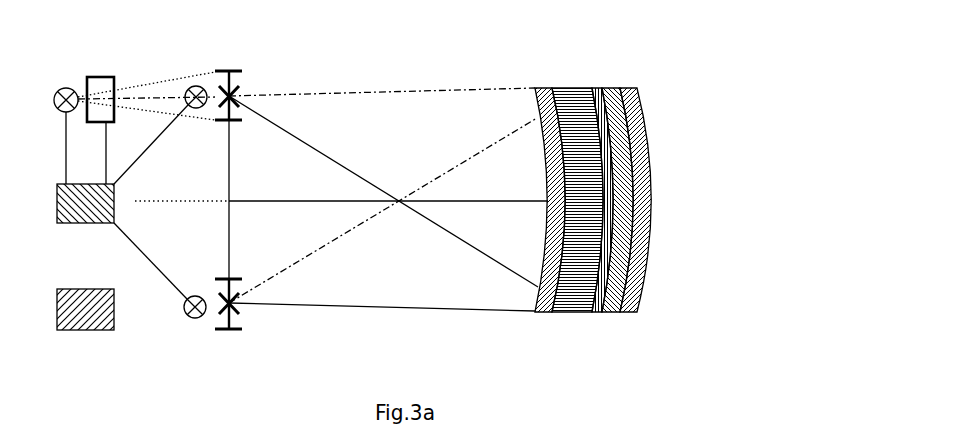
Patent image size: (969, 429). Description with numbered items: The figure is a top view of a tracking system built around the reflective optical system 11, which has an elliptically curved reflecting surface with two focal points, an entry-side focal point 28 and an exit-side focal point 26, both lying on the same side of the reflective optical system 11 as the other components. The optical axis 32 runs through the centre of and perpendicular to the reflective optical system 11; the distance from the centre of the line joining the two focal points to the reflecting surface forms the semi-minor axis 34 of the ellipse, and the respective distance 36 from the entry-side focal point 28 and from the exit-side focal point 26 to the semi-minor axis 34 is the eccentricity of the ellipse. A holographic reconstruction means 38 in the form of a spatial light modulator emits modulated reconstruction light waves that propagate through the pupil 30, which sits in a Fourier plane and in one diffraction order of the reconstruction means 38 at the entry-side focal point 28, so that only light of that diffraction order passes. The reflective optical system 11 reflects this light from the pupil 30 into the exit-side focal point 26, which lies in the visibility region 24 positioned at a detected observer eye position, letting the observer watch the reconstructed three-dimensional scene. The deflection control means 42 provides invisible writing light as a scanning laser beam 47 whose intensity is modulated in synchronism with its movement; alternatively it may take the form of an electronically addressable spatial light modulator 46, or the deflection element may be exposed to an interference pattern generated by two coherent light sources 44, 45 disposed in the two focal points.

The reflective optical system 11 is at (593, 171).
The visibility region 24 is at (215, 71).
The exit-side focal point 26 is at (235, 92).
The entry-side focal point 28 is at (234, 309).
The pupil 30 is at (225, 317).
The optical axis 32 is at (167, 198).
The semi-minor axis 34 is at (273, 200).
The distance 36 is at (228, 227).
The holographic reconstruction means 38 is at (98, 330).
The deflection control means 42 is at (98, 225).
The coherent light source 44 is at (197, 108).
The coherent light source 45 is at (193, 297).
The electronically addressable spatial light modulator 46 is at (115, 76).
The scanning laser beam 47 is at (63, 93).